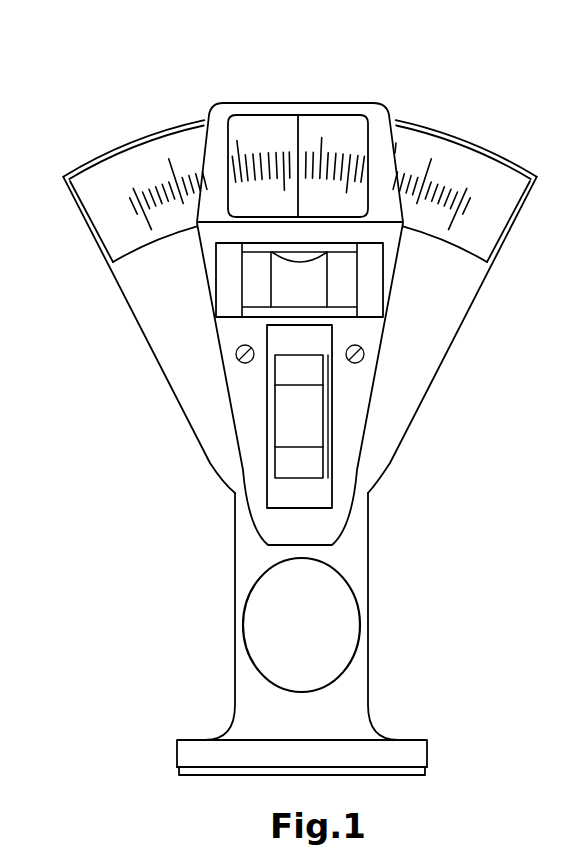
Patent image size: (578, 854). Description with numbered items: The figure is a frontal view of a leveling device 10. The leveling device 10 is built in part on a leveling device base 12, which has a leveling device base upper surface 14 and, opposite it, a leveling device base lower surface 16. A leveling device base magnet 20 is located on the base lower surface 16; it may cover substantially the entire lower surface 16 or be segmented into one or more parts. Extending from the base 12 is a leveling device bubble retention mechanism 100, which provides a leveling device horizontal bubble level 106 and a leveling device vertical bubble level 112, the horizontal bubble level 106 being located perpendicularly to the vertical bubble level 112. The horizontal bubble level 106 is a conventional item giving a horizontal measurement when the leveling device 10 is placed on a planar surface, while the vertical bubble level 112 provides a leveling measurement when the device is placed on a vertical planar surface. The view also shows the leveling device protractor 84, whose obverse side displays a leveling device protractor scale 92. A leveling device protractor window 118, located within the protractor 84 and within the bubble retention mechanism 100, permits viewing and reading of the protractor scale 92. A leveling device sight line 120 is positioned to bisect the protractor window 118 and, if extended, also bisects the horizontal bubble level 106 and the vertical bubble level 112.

The leveling device 10 is at (203, 81).
The leveling device base 12 is at (418, 752).
The leveling device base upper surface 14 is at (243, 767).
The leveling device base lower surface 16 is at (395, 775).
The leveling device base magnet 20 is at (215, 775).
The leveling device protractor 84 is at (498, 160).
The leveling device protractor scale 92 is at (142, 163).
The leveling device bubble retention mechanism 100 is at (360, 418).
The leveling device horizontal bubble level 106 is at (228, 280).
The leveling device vertical bubble level 112 is at (300, 432).
The leveling device protractor window 118 is at (344, 132).
The leveling device sight line 120 is at (297, 127).